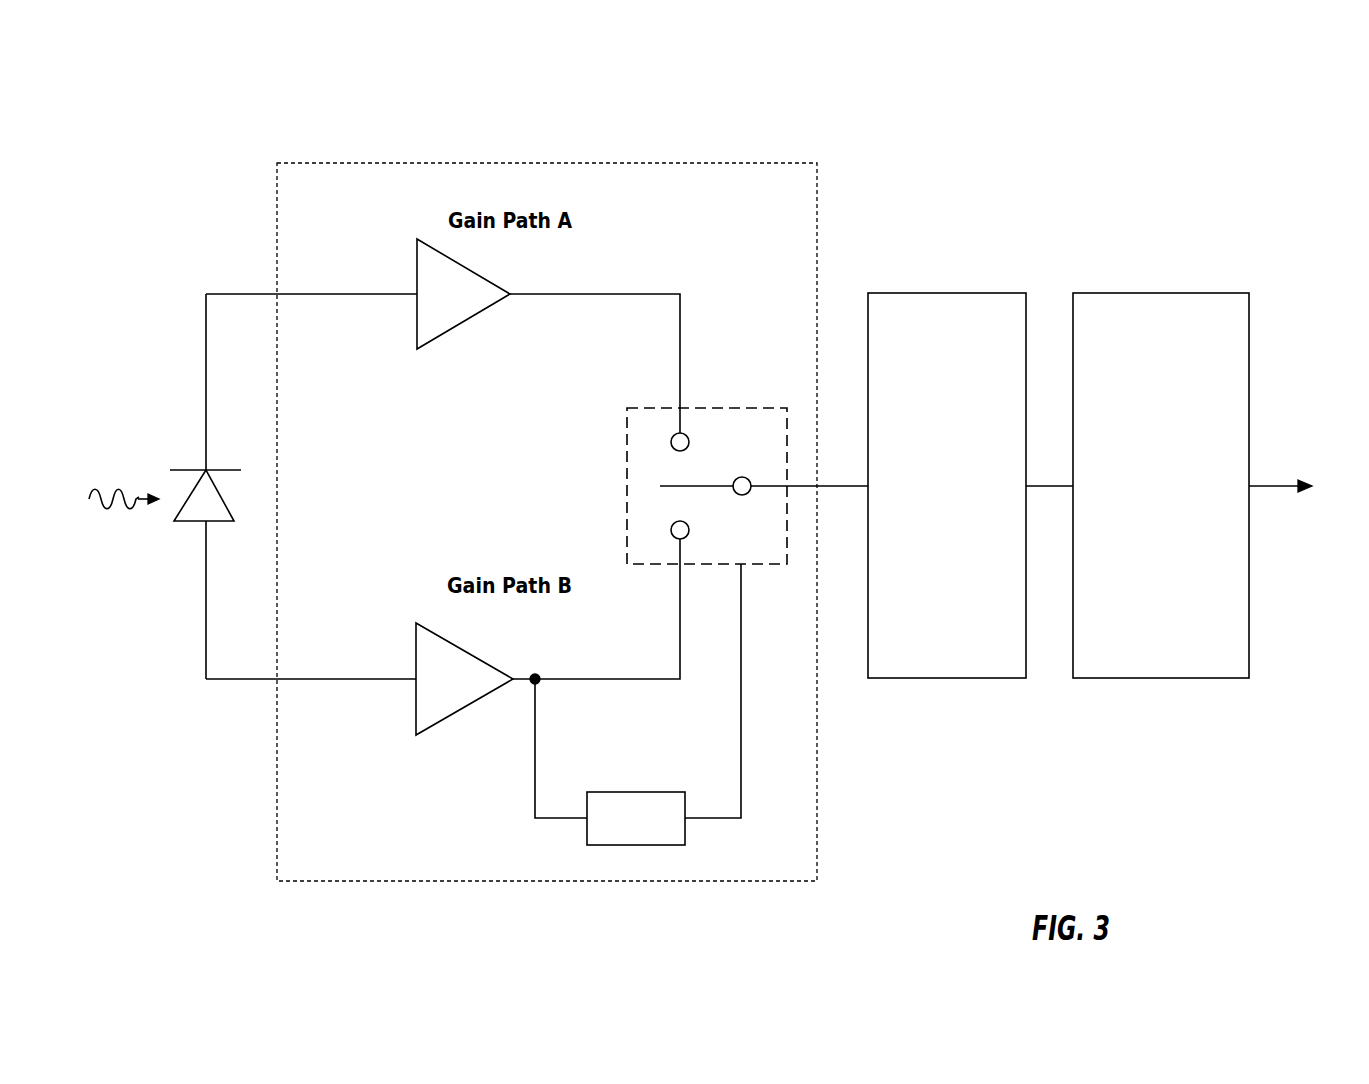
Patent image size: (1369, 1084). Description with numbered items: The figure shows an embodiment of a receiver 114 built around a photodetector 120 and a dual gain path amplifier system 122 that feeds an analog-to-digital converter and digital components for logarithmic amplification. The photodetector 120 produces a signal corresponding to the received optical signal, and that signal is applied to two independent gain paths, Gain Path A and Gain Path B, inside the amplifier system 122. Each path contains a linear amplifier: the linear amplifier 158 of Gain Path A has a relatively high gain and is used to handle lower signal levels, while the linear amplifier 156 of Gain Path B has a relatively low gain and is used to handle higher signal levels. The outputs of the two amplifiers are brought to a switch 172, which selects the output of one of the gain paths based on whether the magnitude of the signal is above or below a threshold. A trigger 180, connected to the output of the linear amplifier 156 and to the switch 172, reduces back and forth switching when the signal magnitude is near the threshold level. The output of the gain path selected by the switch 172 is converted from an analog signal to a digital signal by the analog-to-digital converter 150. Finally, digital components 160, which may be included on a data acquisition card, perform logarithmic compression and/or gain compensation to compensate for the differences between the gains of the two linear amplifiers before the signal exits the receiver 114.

The receiver 114 is at (950, 85).
The photodetector 120 is at (191, 522).
The dual gain path amplifier system 122 is at (537, 881).
The analog-to-digital converter 150 is at (947, 485).
The linear amplifier 156 is at (444, 722).
The linear amplifier 158 is at (450, 330).
The digital components 160 is at (1161, 485).
The switch 172 is at (710, 407).
The trigger 180 is at (623, 792).